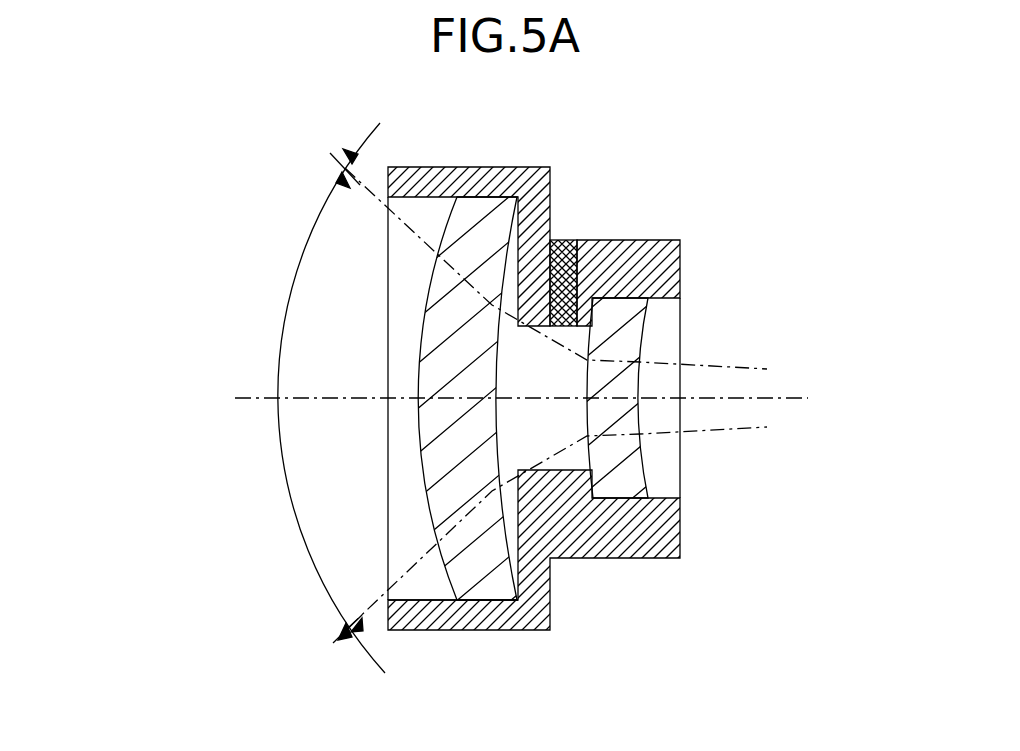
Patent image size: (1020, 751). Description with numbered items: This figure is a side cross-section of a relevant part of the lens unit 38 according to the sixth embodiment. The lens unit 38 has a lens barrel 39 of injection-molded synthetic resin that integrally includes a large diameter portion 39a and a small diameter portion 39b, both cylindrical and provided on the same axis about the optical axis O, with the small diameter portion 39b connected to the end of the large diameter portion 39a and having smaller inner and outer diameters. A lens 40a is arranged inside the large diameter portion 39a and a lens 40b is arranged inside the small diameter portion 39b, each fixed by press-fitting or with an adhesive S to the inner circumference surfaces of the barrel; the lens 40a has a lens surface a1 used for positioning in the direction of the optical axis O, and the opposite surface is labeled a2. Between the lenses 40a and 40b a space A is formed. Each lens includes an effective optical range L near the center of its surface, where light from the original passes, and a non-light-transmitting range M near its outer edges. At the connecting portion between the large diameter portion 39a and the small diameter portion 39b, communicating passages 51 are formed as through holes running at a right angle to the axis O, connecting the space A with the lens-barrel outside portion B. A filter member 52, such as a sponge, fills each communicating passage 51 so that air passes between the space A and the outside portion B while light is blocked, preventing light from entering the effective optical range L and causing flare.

The lens unit 38 is at (742, 171).
The lens barrel 39 is at (576, 414).
The large diameter portion 39a is at (465, 630).
The small diameter portion 39b is at (625, 560).
The lens 40a is at (424, 384).
The lens 40b is at (612, 390).
The communicating passage 51 is at (590, 258).
The filter member 52 is at (572, 240).
The space A is at (546, 386).
The lens-barrel outside portion B is at (709, 293).
The adhesive S is at (438, 196).
The non-light-transmitting range M is at (368, 140).
The effective optical range L is at (302, 253).
The optical axis O is at (266, 396).
The lens surface a1 is at (427, 508).
The second lens surface a2 is at (500, 425).